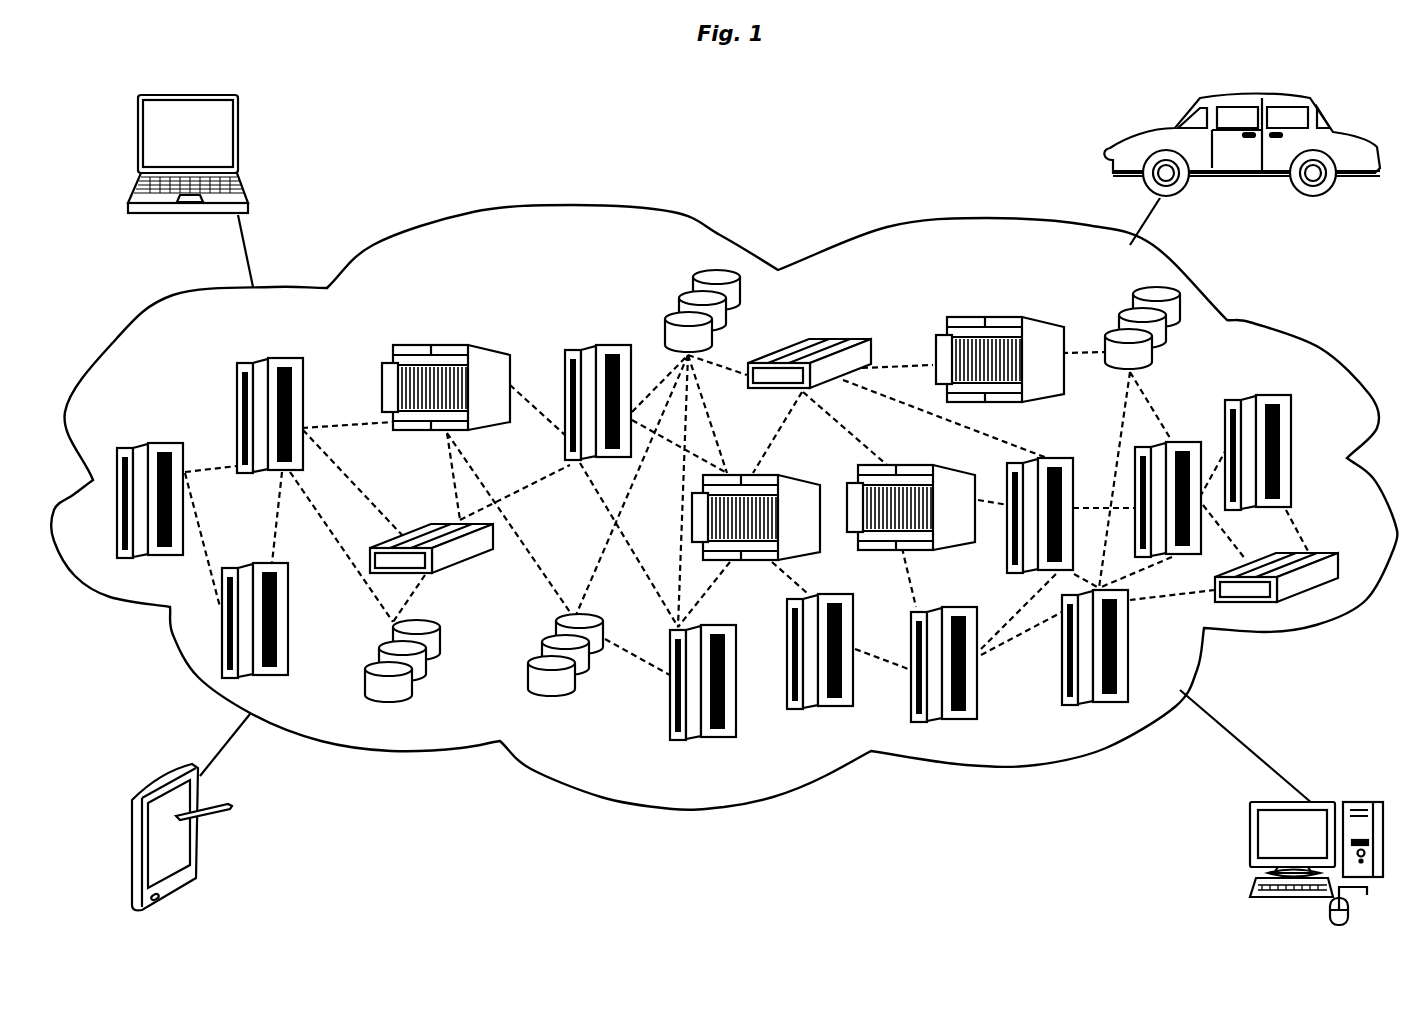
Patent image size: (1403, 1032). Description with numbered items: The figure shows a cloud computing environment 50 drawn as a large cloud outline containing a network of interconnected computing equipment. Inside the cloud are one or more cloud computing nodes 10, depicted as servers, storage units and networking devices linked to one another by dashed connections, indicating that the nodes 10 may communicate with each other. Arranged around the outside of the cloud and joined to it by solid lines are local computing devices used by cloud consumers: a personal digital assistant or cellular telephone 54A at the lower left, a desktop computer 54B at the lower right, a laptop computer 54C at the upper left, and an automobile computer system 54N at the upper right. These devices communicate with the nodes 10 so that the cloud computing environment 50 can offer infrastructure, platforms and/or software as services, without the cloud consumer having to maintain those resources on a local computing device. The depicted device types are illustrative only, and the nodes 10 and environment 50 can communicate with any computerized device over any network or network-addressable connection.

The cloud computing nodes 10 is at (917, 246).
The cloud computing environment 50 is at (573, 240).
The personal digital assistant or cellular telephone 54A is at (181, 875).
The desktop computer 54B is at (1307, 843).
The laptop computer 54C is at (203, 141).
The automobile computer system 54N is at (1248, 163).